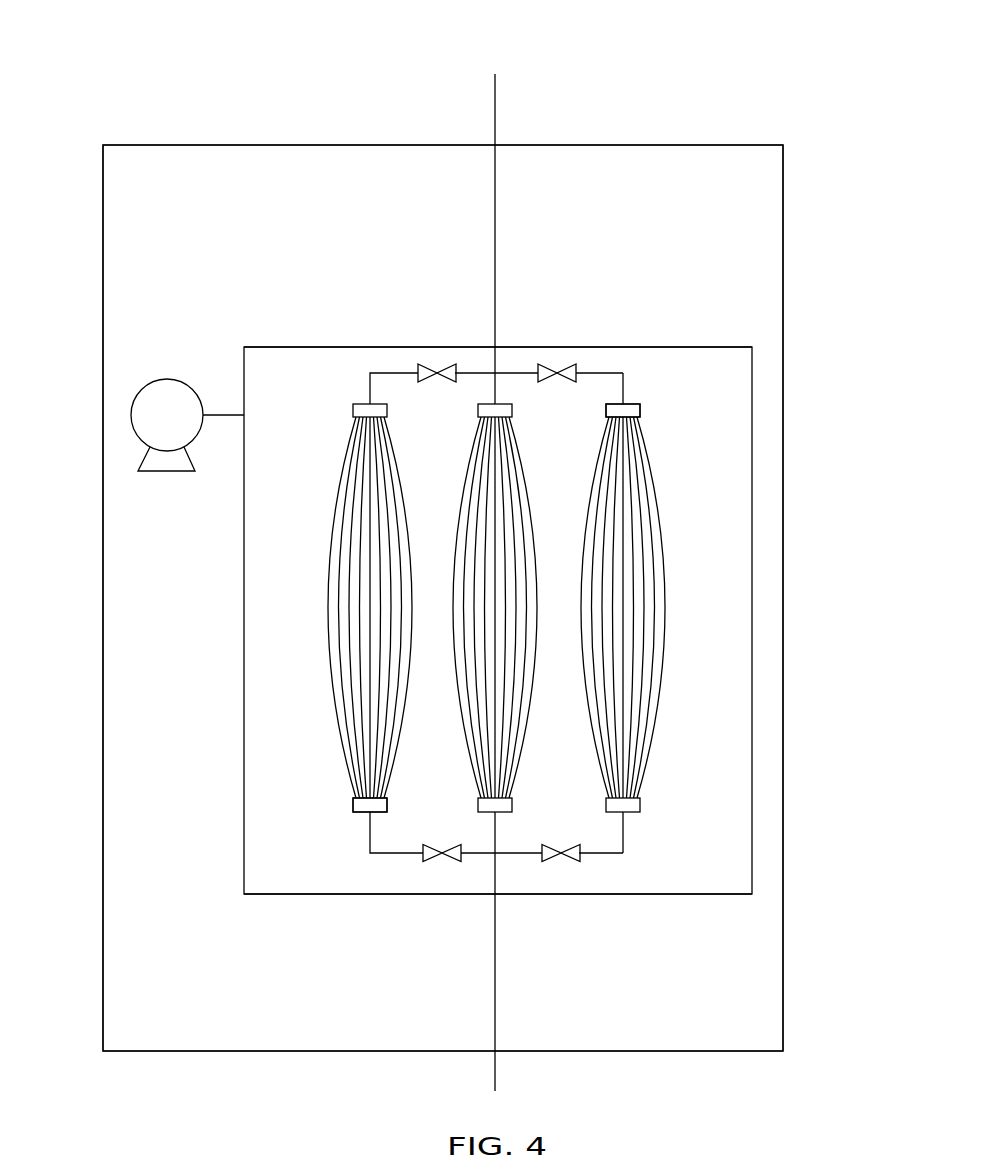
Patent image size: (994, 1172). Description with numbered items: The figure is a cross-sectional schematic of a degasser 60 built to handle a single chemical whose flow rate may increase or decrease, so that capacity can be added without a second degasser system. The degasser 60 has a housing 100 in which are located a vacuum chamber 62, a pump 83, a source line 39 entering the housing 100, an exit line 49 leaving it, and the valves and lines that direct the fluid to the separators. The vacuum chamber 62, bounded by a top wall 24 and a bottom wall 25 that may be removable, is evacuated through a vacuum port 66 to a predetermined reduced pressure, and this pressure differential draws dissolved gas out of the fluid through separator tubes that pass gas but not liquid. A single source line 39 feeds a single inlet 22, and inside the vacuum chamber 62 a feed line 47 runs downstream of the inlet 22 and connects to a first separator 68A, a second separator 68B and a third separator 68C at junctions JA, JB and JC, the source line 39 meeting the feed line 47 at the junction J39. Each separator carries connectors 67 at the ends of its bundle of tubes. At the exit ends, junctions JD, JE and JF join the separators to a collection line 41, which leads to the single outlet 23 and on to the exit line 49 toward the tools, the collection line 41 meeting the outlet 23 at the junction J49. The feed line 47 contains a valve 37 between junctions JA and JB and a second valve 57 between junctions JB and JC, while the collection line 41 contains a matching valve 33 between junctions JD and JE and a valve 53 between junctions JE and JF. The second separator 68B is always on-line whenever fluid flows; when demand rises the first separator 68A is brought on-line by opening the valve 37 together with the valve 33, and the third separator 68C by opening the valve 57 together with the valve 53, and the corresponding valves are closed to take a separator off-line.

The source line 39 is at (495, 128).
The outlet line 49 is at (495, 1070).
The inlet 22 is at (493, 344).
The outlet 23 is at (492, 890).
The top wall 24 is at (722, 347).
The bottom wall 25 is at (731, 894).
The degasser 60 is at (825, 808).
The vacuum chamber 62 is at (262, 505).
The vacuum port 66 is at (226, 415).
The pump 83 is at (131, 420).
The housing 100 is at (783, 738).
The first separator 68A is at (340, 594).
The second separator 68B is at (527, 727).
The third separator 68C is at (657, 604).
The connector 67 is at (638, 410).
The valve 37 is at (441, 362).
The second valve 57 is at (551, 363).
The valve 33 is at (441, 863).
The valve 53 is at (562, 863).
The feed line 47 is at (609, 372).
The collection line 41 is at (607, 855).
The junction JA is at (370, 373).
The junction JB is at (497, 373).
The junction JC is at (624, 374).
The junction JD is at (371, 853).
The junction JE is at (495, 853).
The junction JF is at (623, 853).
The inlet junction J39 is at (496, 372).
The outlet junction J49 is at (497, 855).